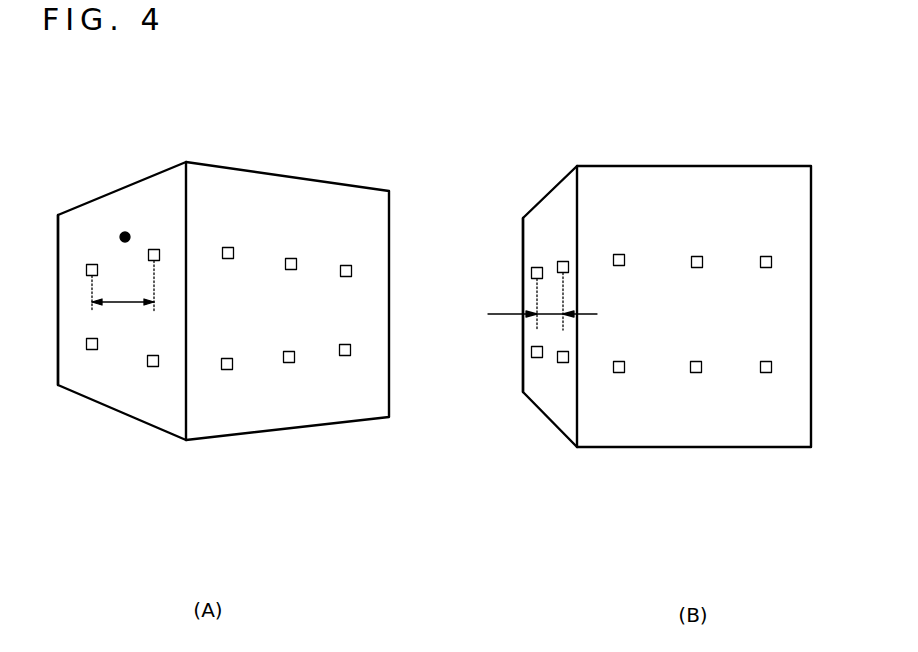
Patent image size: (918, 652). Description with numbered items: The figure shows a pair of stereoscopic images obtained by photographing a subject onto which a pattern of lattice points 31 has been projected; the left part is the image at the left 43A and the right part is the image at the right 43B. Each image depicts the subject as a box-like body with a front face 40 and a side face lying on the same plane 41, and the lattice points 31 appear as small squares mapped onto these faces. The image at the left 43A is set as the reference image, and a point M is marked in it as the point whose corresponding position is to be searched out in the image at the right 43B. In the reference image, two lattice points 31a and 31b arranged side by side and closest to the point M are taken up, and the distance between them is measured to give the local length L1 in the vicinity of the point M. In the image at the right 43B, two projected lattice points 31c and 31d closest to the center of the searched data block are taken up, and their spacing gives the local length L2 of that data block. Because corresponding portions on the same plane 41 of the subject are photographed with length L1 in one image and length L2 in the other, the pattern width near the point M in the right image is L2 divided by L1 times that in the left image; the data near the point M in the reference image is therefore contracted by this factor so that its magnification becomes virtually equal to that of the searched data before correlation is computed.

The lattice points 31 is at (346, 265).
The lattice point 31a is at (154, 249).
The lattice point 31b is at (92, 264).
The projected lattice point 31c is at (563, 261).
The projected lattice point 31d is at (537, 267).
The front face of sensor housing 40 is at (245, 413).
The same plane of the subject 41 is at (112, 398).
The image at the left 43A is at (300, 130).
The image at the right 43B is at (697, 135).
The point M is at (125, 231).
The length L1 is at (123, 286).
The length L2 is at (542, 301).